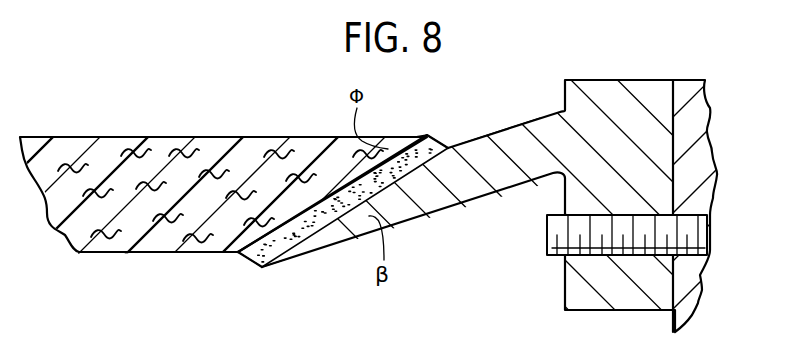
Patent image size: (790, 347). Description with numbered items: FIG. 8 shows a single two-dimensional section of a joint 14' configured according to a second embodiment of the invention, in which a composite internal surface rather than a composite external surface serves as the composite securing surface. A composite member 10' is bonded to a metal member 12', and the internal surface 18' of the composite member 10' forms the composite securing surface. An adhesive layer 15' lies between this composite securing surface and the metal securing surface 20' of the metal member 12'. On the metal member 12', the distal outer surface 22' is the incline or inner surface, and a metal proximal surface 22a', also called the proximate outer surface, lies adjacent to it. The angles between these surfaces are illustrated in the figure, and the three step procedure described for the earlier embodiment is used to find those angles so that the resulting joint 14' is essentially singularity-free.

The composite member 10' is at (213, 172).
The metal member 12' is at (494, 185).
The joint 14' is at (431, 114).
The adhesive layer 15' is at (270, 281).
The internal surface 18' is at (343, 175).
The metal securing surface 20' is at (355, 221).
The distal outer surface 22' is at (492, 210).
The metal proximal surface 22a' is at (500, 112).